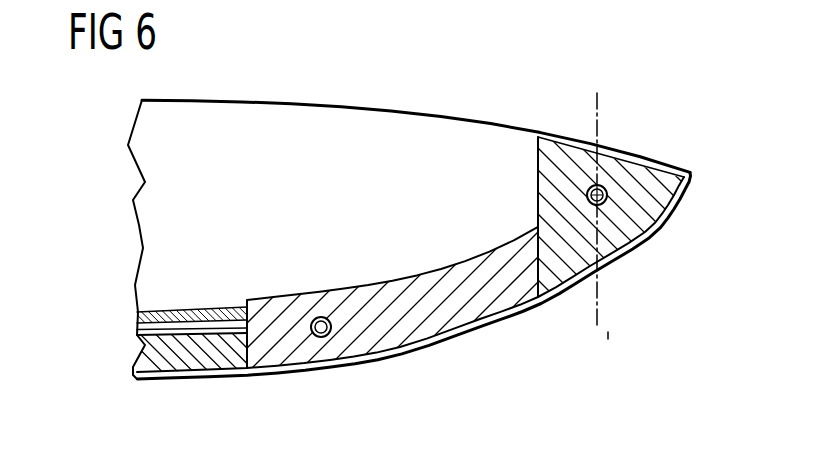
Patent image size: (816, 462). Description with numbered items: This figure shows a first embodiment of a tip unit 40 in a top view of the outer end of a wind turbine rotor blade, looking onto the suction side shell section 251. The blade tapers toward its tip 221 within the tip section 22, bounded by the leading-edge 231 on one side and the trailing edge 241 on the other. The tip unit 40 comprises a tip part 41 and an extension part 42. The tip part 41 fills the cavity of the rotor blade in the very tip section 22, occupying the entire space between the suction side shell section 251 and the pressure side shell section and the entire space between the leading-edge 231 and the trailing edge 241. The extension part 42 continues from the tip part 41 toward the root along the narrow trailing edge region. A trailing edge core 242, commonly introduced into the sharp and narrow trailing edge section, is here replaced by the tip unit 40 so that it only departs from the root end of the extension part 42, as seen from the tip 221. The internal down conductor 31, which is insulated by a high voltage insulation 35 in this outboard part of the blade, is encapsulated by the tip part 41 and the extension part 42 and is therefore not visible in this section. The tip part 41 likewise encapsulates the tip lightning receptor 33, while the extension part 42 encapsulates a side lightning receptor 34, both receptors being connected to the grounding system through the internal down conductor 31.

The tip section 22 is at (488, 92).
The leading-edge 231 is at (340, 107).
The tip 221 is at (690, 172).
The trailing edge 241 is at (332, 370).
The trailing edge core 242 is at (160, 367).
The suction side shell section 251 is at (150, 188).
The internal down conductor 31 is at (198, 302).
The high voltage insulation 35 is at (185, 320).
The tip unit 40 is at (448, 230).
The extension part 42 is at (448, 308).
The tip part 41 is at (612, 222).
The side lightning receptor 34 is at (320, 317).
The tip lightning receptor 33 is at (607, 196).